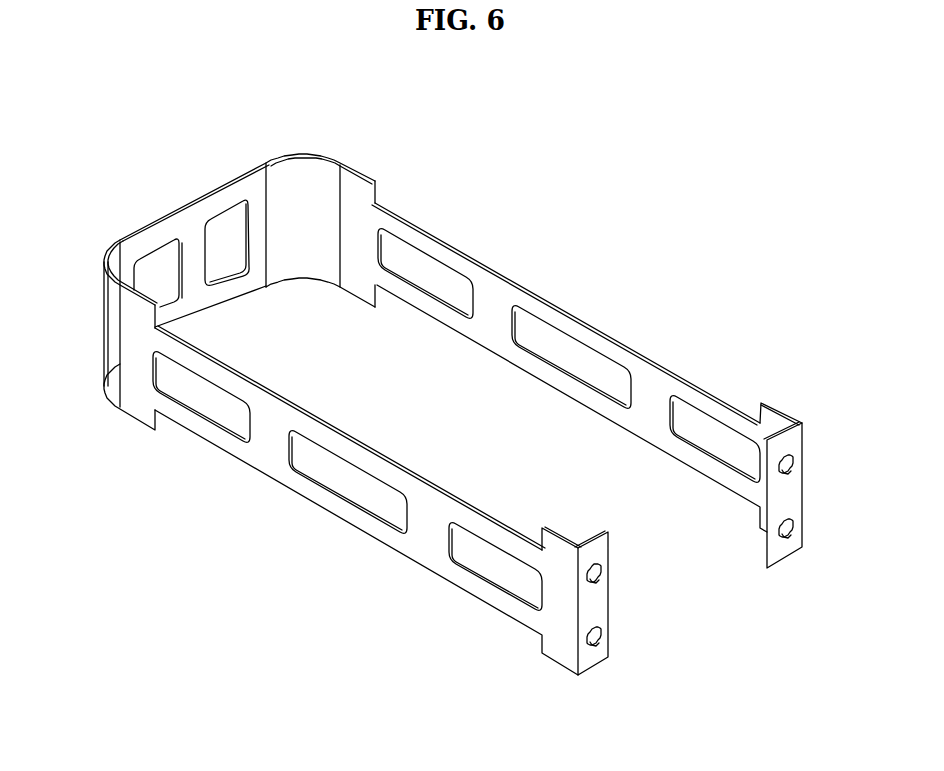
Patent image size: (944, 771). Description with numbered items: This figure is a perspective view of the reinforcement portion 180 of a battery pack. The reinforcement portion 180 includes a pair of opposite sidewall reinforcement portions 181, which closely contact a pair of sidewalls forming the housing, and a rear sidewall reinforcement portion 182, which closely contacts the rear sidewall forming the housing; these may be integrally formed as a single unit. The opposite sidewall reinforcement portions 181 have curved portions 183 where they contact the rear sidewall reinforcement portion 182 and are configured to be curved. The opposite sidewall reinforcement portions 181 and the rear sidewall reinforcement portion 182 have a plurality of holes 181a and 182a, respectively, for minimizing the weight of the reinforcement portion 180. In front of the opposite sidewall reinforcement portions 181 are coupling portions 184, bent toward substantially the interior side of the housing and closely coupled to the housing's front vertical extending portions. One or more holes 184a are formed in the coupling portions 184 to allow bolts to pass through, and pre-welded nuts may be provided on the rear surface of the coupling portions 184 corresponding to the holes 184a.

The reinforcement portion 180 is at (670, 272).
The opposite sidewall reinforcement portions 181 is at (655, 405).
The holes 181a is at (592, 365).
The rear sidewall reinforcement portion 182 is at (193, 305).
The holes 182a is at (222, 253).
The curved portions 183 is at (297, 198).
The coupling portions 184 is at (593, 655).
The holes 184a is at (597, 571).